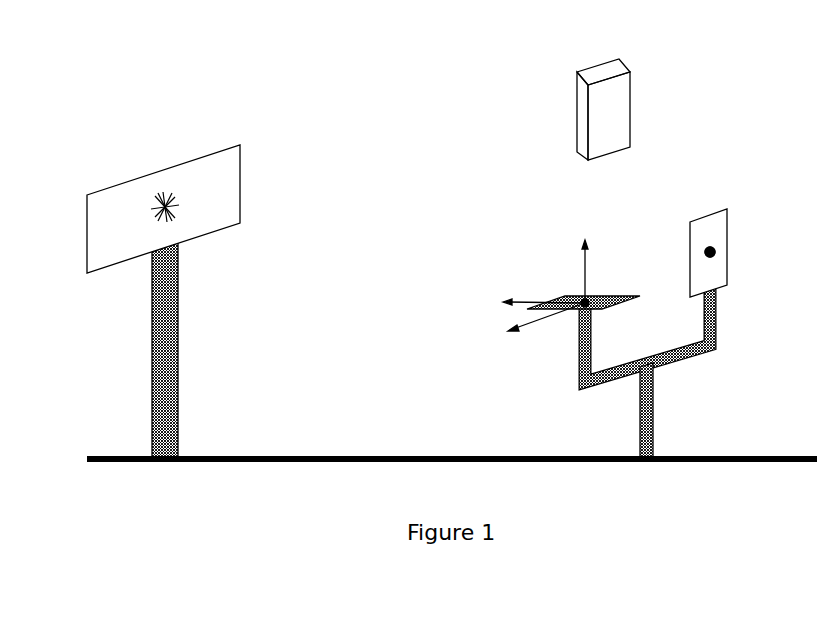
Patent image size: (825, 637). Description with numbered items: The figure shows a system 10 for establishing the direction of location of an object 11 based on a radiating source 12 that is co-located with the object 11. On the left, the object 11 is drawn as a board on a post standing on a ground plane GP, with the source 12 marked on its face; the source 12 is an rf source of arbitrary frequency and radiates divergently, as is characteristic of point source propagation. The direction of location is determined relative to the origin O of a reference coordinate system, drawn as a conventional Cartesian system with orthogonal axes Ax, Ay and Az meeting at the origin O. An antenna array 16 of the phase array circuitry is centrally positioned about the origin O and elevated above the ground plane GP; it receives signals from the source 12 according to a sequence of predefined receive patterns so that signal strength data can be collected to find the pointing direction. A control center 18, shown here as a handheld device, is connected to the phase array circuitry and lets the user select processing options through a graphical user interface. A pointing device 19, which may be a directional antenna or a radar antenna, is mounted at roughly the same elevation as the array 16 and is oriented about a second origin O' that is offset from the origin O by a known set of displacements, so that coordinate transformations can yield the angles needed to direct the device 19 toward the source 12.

The system 10 is at (480, 83).
The object 11 is at (202, 274).
The radiating source 12 is at (191, 157).
The antenna array 16 is at (594, 274).
The control center 18 is at (641, 100).
The pointing device 19 is at (742, 225).
The x axis Ax is at (521, 303).
The y axis Ay is at (535, 332).
The z axis Az is at (583, 260).
The origin O is at (622, 311).
The second origin O' is at (755, 243).
The ground plane GP is at (452, 437).